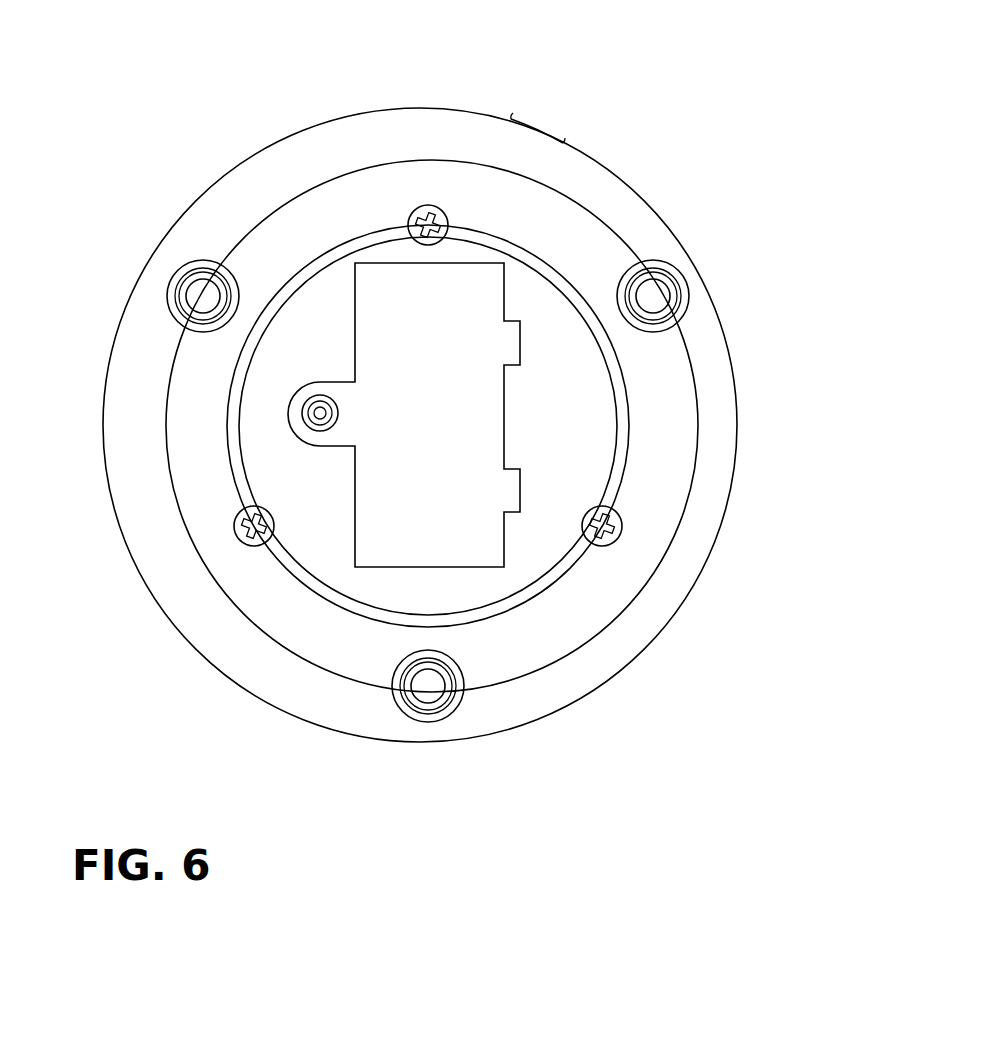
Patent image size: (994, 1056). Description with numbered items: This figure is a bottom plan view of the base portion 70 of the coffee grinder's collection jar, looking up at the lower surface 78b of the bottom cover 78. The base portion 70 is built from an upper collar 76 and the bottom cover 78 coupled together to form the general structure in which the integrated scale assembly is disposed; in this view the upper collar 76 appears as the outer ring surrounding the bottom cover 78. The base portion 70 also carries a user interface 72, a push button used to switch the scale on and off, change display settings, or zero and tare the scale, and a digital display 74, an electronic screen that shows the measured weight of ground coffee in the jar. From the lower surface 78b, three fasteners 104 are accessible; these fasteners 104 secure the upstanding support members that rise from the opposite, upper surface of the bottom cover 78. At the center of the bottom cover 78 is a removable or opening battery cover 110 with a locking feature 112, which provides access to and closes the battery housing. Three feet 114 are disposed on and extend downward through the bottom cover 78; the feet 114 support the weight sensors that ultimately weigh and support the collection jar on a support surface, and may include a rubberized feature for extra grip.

The base portion 70 is at (675, 162).
The user interface 72 is at (551, 122).
The digital display 74 is at (425, 106).
The upper collar 76 is at (657, 241).
The bottom cover 78 is at (678, 393).
The lower surface of the bottom cover 78b is at (650, 479).
The fasteners 104 is at (426, 206).
The battery cover 110 is at (378, 340).
The locking feature 112 is at (312, 424).
The feet 114 is at (202, 292).